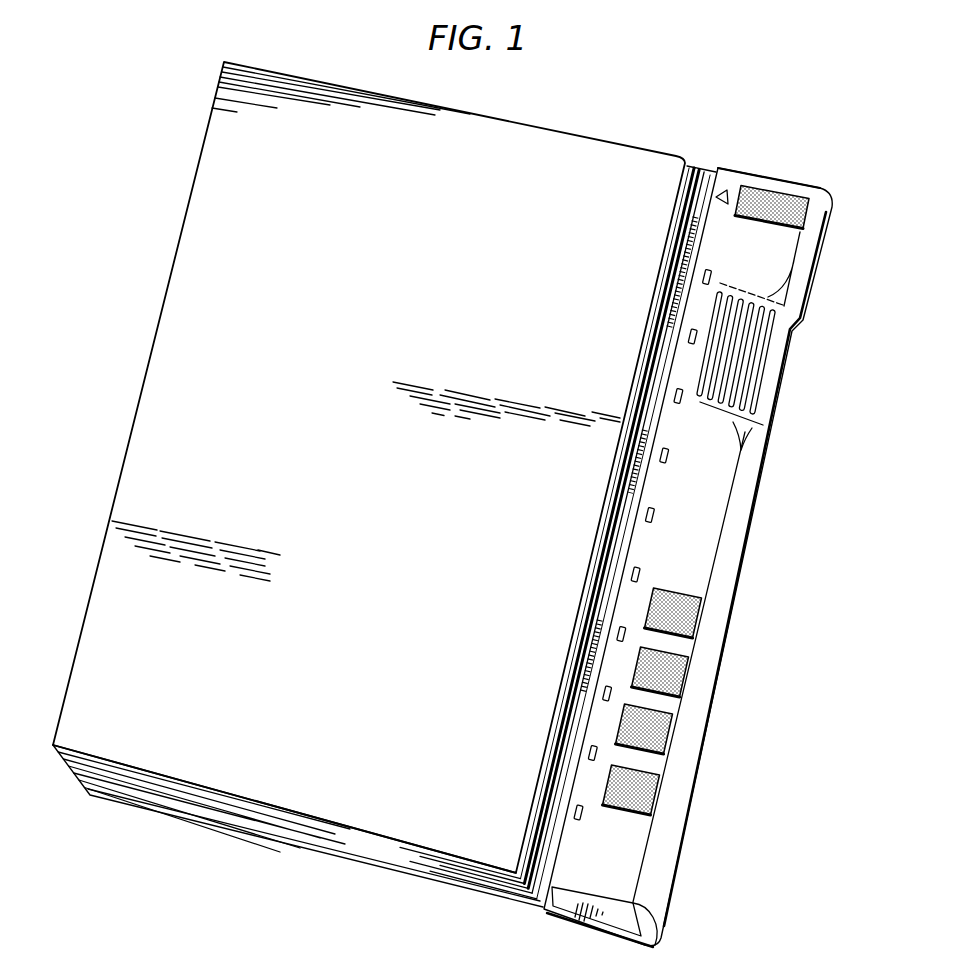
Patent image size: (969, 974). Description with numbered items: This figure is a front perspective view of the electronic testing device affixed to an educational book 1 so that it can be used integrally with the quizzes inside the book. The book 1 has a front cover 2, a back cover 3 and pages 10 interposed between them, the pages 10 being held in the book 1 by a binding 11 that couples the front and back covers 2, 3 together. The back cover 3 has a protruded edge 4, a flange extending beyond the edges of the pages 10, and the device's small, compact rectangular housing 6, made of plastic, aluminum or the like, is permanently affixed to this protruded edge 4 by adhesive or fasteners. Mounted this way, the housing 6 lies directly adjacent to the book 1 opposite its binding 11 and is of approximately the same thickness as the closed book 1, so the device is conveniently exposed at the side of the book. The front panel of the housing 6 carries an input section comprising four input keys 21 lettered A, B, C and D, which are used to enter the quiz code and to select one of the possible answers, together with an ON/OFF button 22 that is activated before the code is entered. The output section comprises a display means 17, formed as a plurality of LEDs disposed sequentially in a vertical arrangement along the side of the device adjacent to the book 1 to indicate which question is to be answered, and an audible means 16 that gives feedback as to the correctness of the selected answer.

The educational book 1 is at (196, 146).
The front cover 2 is at (358, 330).
The back cover 3 is at (360, 870).
The protruded edge 4 is at (547, 913).
The rectangular housing 6 is at (700, 541).
The pages 10 is at (143, 792).
The binding 11 is at (172, 270).
The audible means 16 is at (748, 370).
The display means 17 is at (653, 514).
The input keys 21 is at (674, 677).
The ON/OFF button 22 is at (762, 186).